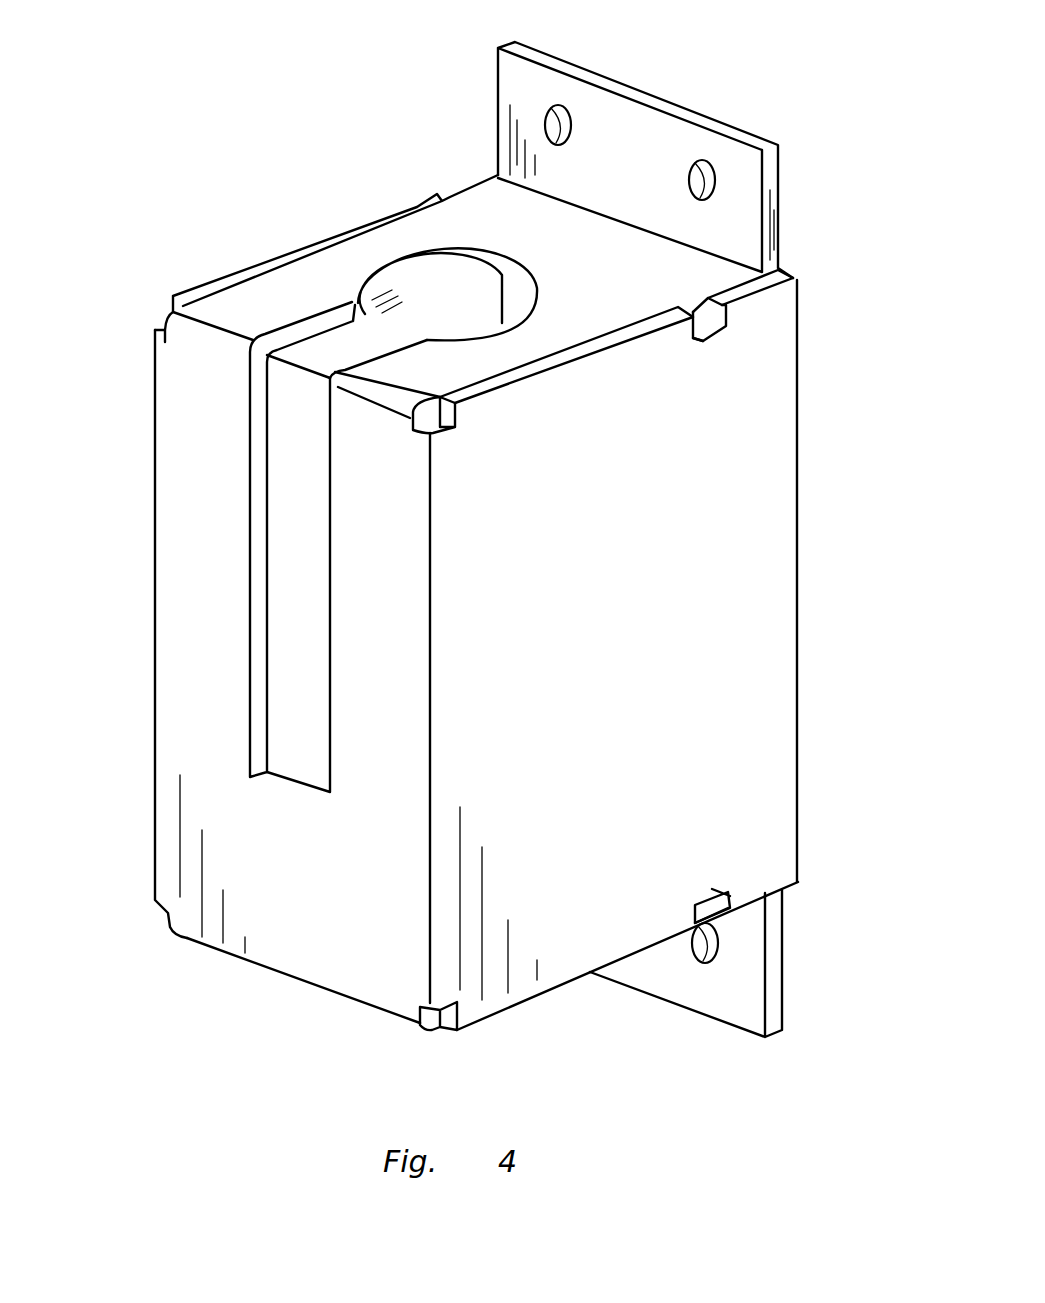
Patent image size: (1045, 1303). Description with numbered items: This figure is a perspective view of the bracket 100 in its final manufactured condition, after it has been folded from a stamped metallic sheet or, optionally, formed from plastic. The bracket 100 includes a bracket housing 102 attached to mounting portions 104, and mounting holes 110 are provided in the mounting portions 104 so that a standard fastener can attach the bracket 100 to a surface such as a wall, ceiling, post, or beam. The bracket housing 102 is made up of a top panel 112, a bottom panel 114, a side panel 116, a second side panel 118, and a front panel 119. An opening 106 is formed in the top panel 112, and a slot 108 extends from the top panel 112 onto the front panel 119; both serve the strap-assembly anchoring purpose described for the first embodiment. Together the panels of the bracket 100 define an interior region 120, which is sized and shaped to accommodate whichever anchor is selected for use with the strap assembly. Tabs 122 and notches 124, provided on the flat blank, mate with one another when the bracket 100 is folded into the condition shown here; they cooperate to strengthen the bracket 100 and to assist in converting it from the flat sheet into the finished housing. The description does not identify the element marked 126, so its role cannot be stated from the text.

The bracket 100 is at (467, 542).
The bracket housing 102 is at (467, 542).
The mounting portions 104 is at (662, 177).
The opening 106 is at (400, 257).
The slot 108 is at (250, 602).
The mounting holes 110 is at (560, 110).
The top panel 112 is at (628, 298).
The bottom panel 114 is at (305, 987).
The side panel 116 is at (640, 603).
The side panel 118 is at (153, 467).
The front panel 119 is at (275, 905).
The interior region 120 is at (290, 663).
The tabs 122 is at (723, 330).
The notches 124 is at (710, 338).
The corner clip 126 is at (455, 432).